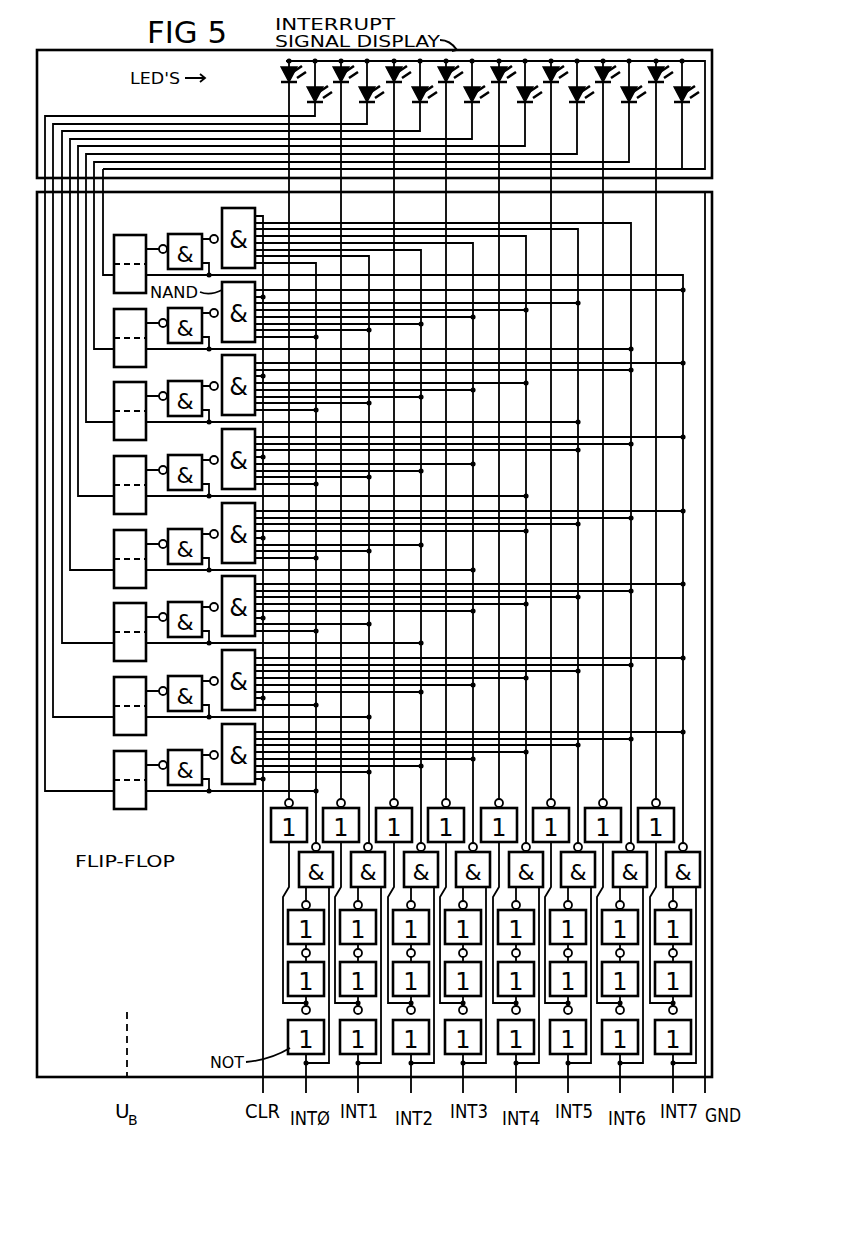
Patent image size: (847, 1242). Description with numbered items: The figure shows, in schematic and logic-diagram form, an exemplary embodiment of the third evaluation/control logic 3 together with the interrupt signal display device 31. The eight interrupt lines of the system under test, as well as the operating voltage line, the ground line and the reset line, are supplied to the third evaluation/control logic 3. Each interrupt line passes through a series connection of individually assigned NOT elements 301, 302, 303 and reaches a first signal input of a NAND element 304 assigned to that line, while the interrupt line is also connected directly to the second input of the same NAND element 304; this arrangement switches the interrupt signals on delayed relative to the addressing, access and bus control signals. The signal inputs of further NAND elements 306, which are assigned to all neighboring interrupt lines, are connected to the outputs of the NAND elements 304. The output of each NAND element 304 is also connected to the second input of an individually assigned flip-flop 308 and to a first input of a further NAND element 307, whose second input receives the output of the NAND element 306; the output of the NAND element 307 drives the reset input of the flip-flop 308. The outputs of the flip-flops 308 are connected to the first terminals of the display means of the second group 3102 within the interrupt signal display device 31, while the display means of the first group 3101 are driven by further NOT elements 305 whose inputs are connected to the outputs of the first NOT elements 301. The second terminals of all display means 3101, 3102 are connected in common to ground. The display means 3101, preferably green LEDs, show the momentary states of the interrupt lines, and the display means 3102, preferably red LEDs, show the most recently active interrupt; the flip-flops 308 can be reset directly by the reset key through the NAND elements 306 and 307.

The third evaluation/control logic 3 is at (712, 200).
The interrupt signal display device 31 is at (712, 48).
The display means of a first group 3101 is at (280, 74).
The display means of a second group 3102 is at (307, 95).
The NOT element 301 is at (290, 1035).
The NOT element 302 is at (289, 978).
The NOT element 303 is at (289, 925).
The NAND element 304 is at (300, 868).
The NOT element 305 is at (290, 840).
The NAND element 306 is at (255, 208).
The NAND element 307 is at (190, 233).
The flip-flop 308 is at (128, 235).